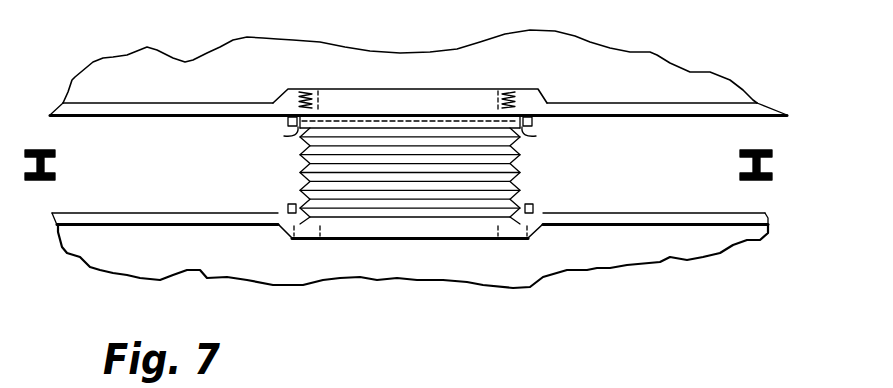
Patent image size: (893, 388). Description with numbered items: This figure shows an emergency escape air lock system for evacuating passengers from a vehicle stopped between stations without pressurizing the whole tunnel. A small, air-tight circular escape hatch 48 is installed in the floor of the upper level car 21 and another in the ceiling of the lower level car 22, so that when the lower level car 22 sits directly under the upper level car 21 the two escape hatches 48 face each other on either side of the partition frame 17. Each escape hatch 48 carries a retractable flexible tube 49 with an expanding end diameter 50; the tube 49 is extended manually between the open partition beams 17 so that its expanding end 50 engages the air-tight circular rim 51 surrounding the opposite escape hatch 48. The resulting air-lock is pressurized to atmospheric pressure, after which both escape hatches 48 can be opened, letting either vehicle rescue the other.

The partition frame 17 is at (56, 163).
The upper level car 21 is at (652, 63).
The lower level car 22 is at (597, 257).
The escape hatch 48 is at (440, 90).
The retractable flexible tube 49 is at (312, 88).
The expanding end diameter 50 is at (298, 105).
The air-tight circular rim 51 is at (288, 126).